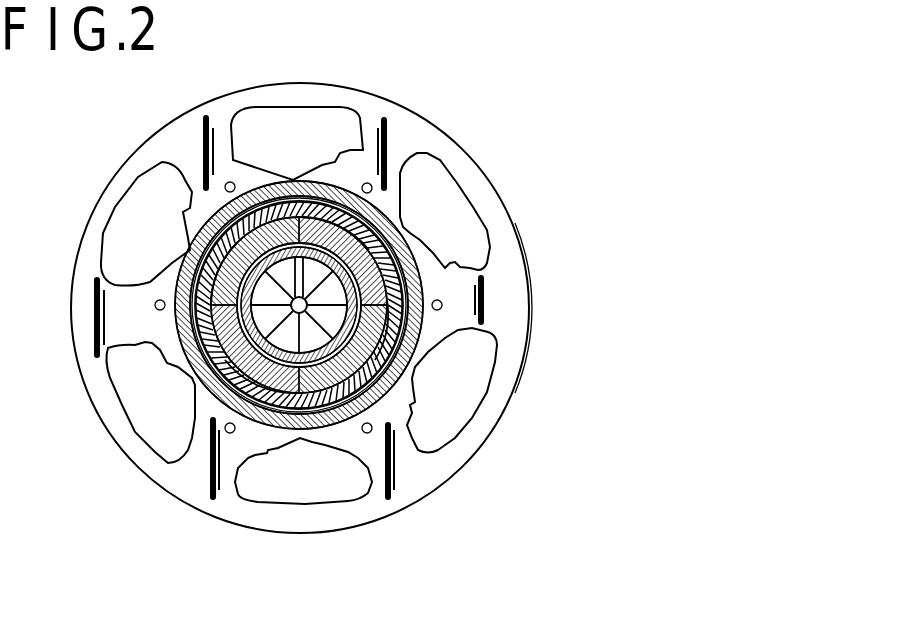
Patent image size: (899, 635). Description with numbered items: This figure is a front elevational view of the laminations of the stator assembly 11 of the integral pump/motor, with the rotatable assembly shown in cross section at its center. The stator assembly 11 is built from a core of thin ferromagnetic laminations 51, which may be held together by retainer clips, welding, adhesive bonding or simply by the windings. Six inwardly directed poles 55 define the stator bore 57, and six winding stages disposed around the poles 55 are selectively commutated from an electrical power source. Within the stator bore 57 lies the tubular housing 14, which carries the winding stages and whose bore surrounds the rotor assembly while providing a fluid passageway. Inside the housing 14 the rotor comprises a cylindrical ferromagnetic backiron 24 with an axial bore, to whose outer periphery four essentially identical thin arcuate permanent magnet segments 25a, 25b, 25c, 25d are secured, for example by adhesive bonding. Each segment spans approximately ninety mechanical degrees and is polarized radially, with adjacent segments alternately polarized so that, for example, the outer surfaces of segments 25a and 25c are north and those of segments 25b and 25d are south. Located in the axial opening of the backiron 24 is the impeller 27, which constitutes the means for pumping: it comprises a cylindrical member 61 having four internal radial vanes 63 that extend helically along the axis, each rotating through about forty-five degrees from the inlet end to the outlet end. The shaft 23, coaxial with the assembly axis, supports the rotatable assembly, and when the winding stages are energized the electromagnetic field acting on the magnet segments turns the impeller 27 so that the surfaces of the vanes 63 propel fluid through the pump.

The stator assembly 11 is at (122, 497).
The tubular housing 14 is at (398, 250).
The shaft 23 is at (200, 381).
The backiron 24 is at (360, 352).
The arcuate permanent magnet segment 25a is at (410, 365).
The arcuate permanent magnet segment 25b is at (352, 232).
The arcuate permanent magnet segment 25c is at (193, 253).
The arcuate permanent magnet segment 25d is at (222, 407).
The impeller 27 is at (400, 208).
The laminations 51 is at (503, 195).
The poles 55 is at (368, 145).
The stator bore 57 is at (520, 287).
The cylindrical member 61 is at (188, 255).
The helical radial vanes 63 is at (297, 200).